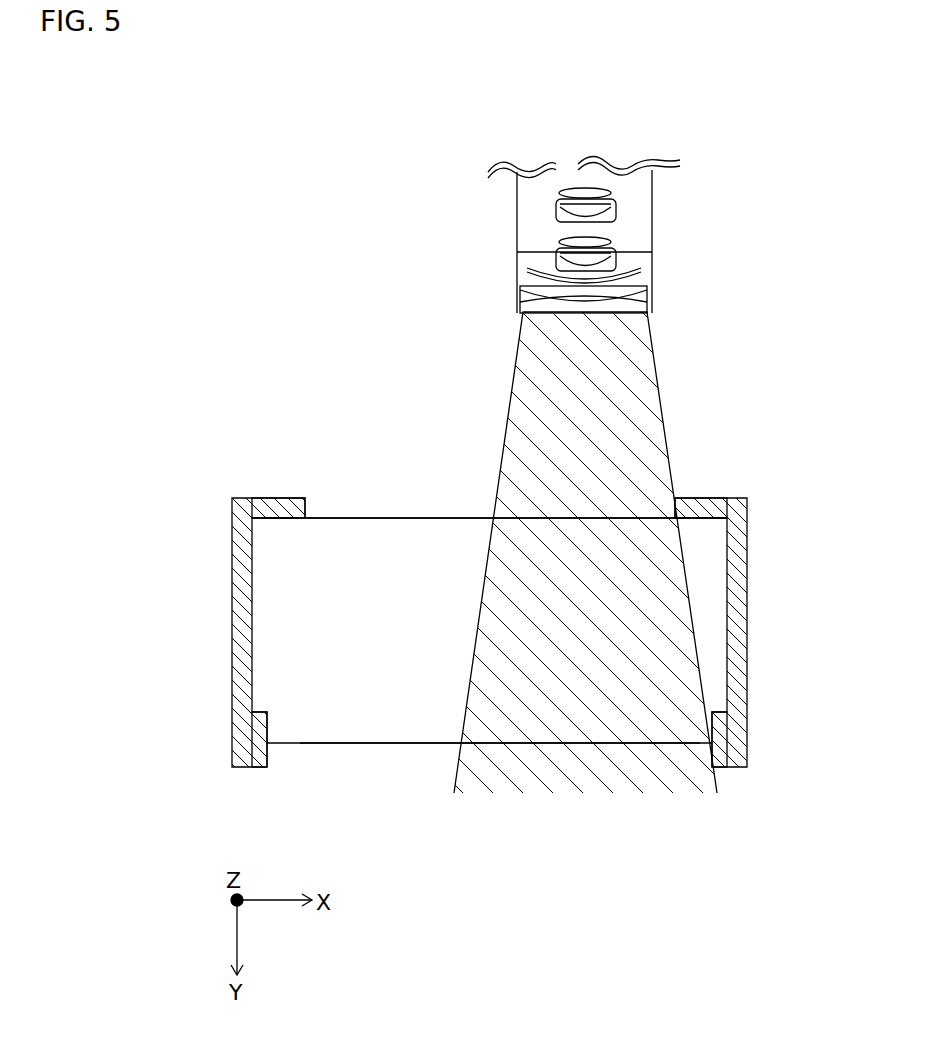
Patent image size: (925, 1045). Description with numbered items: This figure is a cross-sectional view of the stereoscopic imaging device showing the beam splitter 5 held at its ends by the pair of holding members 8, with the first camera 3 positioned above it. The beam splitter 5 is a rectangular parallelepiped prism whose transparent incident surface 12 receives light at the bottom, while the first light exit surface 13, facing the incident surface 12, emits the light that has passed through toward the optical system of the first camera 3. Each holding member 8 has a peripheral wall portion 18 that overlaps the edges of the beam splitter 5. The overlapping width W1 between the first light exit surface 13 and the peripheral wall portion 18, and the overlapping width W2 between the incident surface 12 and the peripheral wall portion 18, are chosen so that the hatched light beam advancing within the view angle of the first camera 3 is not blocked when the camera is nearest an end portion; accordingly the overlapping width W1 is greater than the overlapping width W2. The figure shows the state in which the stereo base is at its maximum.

The first camera 3 is at (527, 228).
The beam splitter 5 is at (355, 535).
The holding members 8 is at (240, 510).
The incident surface 12 is at (390, 746).
The first light exit surface 13 is at (445, 516).
The peripheral wall portion 18 is at (275, 512).
The overlapping width W1 is at (305, 498).
The overlapping width W2 is at (262, 712).